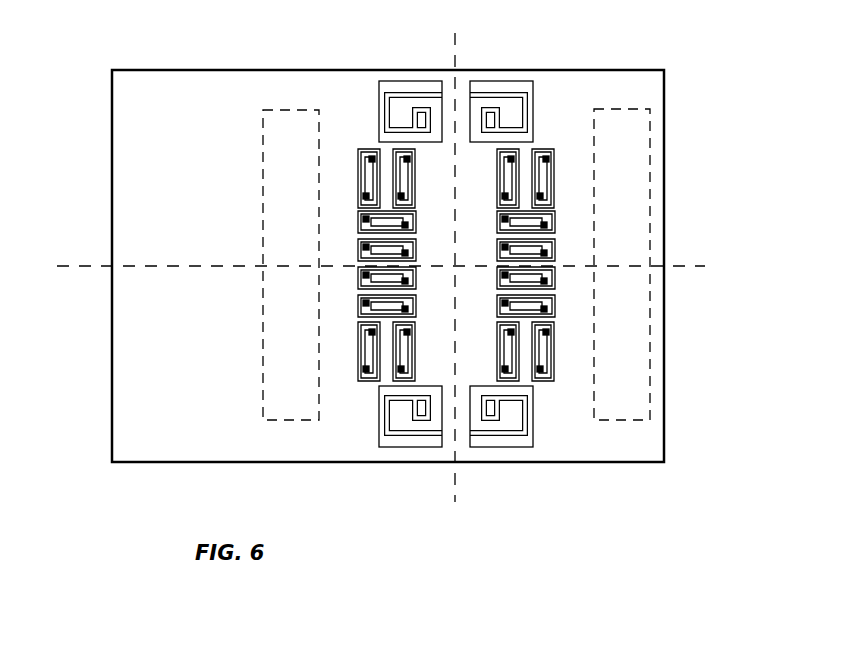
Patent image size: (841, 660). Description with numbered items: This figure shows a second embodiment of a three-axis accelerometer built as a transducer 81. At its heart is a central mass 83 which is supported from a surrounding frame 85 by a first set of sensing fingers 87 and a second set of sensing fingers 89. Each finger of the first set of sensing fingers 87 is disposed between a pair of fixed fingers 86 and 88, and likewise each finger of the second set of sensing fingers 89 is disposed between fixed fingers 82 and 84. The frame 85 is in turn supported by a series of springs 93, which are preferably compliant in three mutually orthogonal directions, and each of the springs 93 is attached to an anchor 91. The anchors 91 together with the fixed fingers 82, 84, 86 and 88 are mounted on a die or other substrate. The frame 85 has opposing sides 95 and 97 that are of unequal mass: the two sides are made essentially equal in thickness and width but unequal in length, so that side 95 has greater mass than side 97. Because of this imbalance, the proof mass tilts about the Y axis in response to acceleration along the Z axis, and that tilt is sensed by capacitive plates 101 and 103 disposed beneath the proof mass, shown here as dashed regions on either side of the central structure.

The transducer 81 is at (86, 50).
The fixed finger 82 is at (283, 68).
The central mass 83 is at (487, 302).
The fixed finger 84 is at (408, 341).
The frame 85 is at (494, 463).
The fixed finger 86 is at (394, 298).
The first set of sensing fingers 87 is at (518, 235).
The fixed finger 88 is at (393, 314).
The second set of sensing fingers 89 is at (523, 180).
The anchor 91 is at (481, 110).
The spring 93 is at (388, 108).
The side of frame 95 is at (180, 480).
The side of frame 97 is at (636, 478).
The capacitive plate 101 is at (263, 227).
The capacitive plate 103 is at (650, 200).